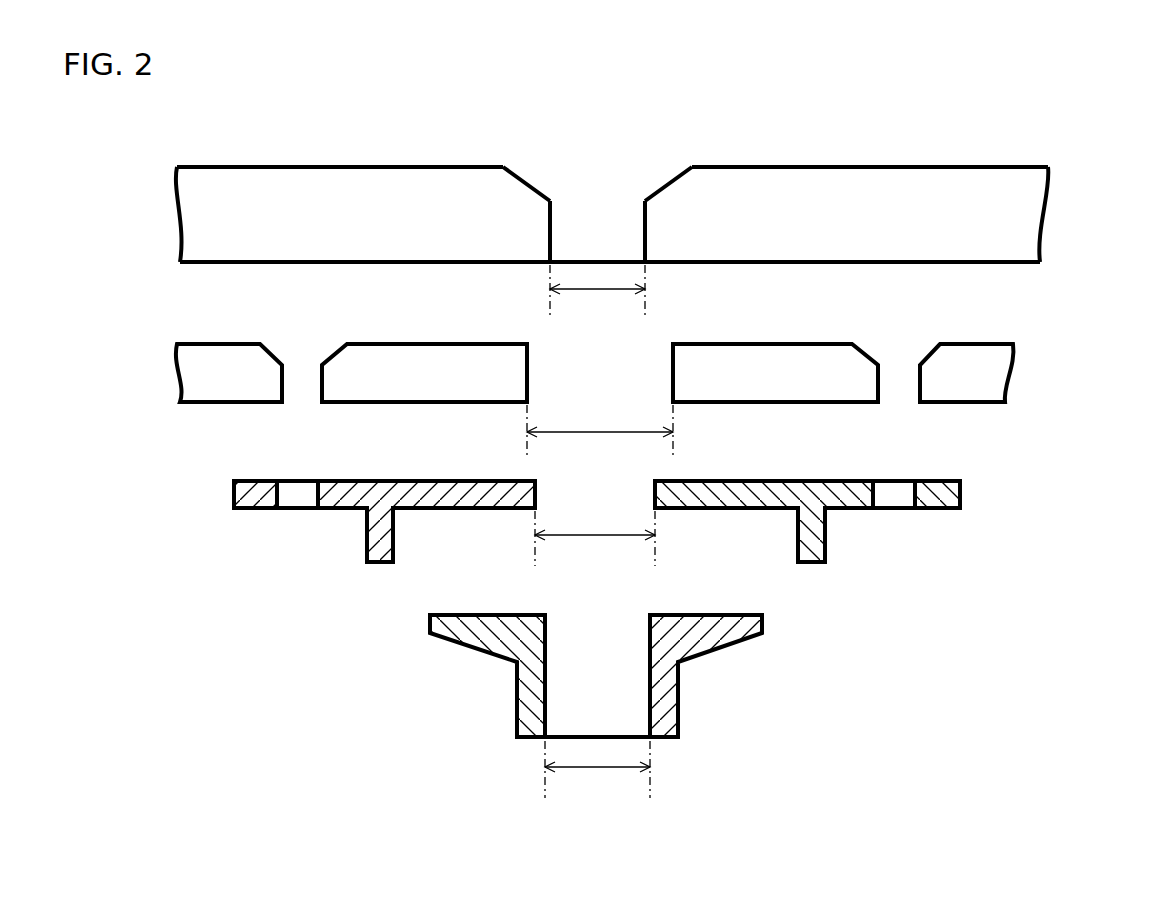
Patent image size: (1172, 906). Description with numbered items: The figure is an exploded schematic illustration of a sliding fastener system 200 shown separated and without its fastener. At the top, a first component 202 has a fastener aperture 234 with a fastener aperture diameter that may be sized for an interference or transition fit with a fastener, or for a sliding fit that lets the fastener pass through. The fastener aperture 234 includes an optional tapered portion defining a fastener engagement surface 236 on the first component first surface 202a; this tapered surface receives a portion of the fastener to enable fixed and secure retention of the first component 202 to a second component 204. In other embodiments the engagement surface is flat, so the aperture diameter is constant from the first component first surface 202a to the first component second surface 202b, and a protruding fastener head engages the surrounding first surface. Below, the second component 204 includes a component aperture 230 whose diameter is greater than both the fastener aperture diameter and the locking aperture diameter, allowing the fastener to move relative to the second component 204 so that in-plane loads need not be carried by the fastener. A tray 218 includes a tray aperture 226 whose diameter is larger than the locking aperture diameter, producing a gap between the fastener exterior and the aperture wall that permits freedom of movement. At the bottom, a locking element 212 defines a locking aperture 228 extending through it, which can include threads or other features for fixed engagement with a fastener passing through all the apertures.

The sliding fastener system 200 is at (1104, 118).
The first component 202 is at (626, 208).
The first component first surface 202a is at (343, 165).
The first component second surface 202b is at (222, 264).
The second component 204 is at (985, 376).
The locking element 212 is at (517, 700).
The tray 218 is at (250, 497).
The tray aperture 226 is at (612, 506).
The locking aperture 228 is at (617, 694).
The component aperture 230 is at (617, 384).
The fastener aperture 234 is at (618, 231).
The fastener engagement surface 236 is at (536, 190).